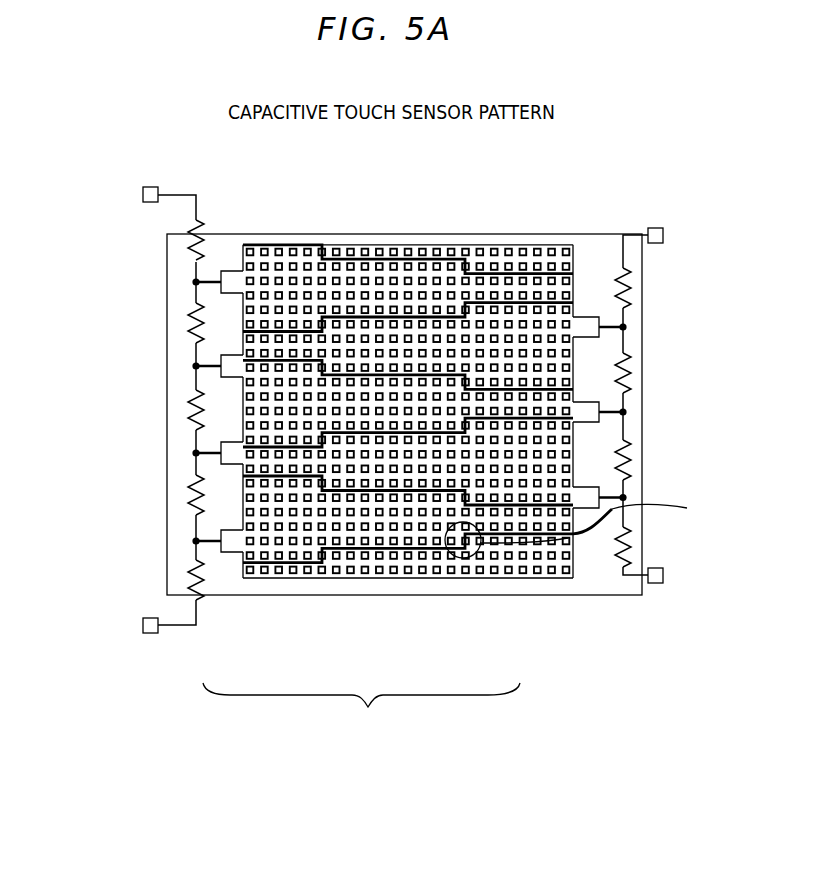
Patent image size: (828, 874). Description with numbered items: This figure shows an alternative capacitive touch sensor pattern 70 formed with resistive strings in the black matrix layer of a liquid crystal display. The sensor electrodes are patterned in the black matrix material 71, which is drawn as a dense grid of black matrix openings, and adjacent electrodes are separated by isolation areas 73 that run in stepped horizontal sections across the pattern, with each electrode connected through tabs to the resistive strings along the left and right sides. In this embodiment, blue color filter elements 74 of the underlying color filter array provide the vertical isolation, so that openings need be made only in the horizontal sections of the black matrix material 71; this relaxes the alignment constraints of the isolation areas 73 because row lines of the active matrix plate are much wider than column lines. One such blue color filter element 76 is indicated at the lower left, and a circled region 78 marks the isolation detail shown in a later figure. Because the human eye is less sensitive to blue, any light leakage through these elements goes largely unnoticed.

The capacitive touch sensor pattern 70 is at (377, 147).
The black matrix material 71 is at (486, 244).
The isolation area 73 is at (278, 510).
The blue color filter elements 74 is at (278, 510).
The blue color filter element 76 is at (323, 550).
The isolation area detail region (FIG. 7B) 78 is at (522, 568).